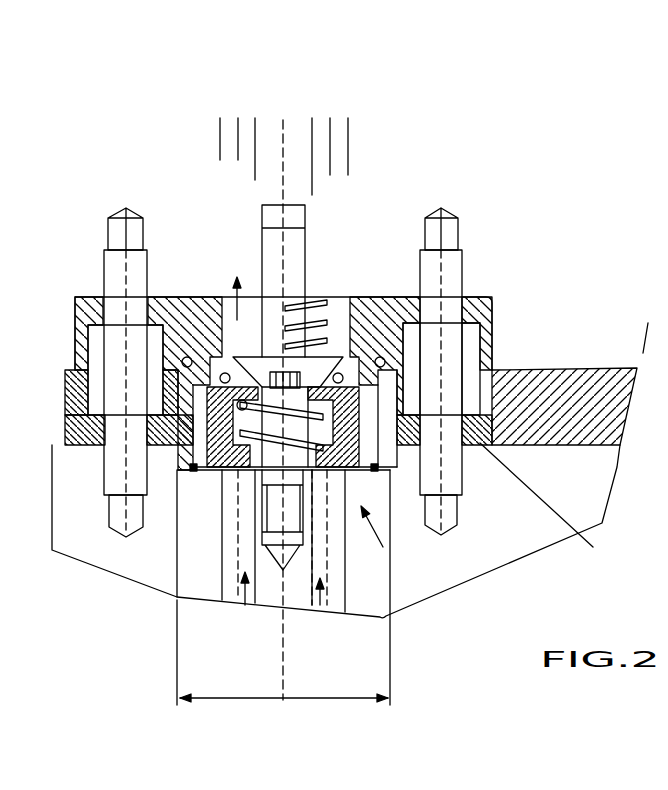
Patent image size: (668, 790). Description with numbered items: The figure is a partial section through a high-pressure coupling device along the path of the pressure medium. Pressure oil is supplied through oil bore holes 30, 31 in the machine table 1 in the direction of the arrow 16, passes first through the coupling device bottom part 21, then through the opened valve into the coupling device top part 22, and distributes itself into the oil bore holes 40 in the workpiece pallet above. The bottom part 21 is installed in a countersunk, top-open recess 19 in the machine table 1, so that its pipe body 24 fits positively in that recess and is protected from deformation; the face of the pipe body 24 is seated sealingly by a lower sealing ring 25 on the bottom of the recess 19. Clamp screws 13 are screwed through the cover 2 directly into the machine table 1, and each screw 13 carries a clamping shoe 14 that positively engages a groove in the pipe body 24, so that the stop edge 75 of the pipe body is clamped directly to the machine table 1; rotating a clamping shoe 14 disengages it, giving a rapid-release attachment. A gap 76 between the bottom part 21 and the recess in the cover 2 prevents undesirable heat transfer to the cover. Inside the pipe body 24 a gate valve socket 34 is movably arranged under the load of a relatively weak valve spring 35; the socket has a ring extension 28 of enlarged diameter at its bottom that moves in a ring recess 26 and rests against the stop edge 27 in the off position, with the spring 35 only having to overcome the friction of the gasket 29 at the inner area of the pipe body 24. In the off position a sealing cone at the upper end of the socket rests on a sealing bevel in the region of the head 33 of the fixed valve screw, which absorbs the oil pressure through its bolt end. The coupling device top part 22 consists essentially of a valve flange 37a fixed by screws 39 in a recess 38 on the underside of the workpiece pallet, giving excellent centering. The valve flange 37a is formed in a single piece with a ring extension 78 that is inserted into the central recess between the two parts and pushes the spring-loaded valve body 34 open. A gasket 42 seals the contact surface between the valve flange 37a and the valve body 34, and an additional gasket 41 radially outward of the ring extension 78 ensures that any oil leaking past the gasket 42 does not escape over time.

The machine table 1 is at (578, 488).
The cover 2 is at (607, 413).
The clamp screws 13 is at (117, 472).
The clamping shoe 14 is at (544, 504).
The arrow 16 is at (322, 604).
The recess 19 is at (172, 462).
The coupling device bottom part 21 is at (358, 472).
The coupling device top part 22 is at (318, 278).
The pipe body 24 is at (188, 475).
The lower sealing ring 25 is at (385, 482).
The ring recess 26 is at (390, 478).
The stop edge 27 is at (390, 478).
The ring extension 28 is at (370, 478).
The gasket 29 is at (463, 400).
The oil bore hole 30 is at (283, 587).
The oil bore hole 31 is at (333, 582).
The head of valve screw 33 is at (333, 350).
The gate valve socket 34 is at (208, 477).
The valve spring 35 is at (350, 475).
The valve flange 37a is at (362, 380).
The recess 38 is at (493, 332).
The screws 39 is at (132, 238).
The oil bore holes 40 is at (238, 147).
The gasket 41 is at (187, 355).
The gasket 42 is at (224, 372).
The stop edge 75 is at (440, 478).
The gap 76 is at (378, 330).
The ring extension 78 is at (402, 397).